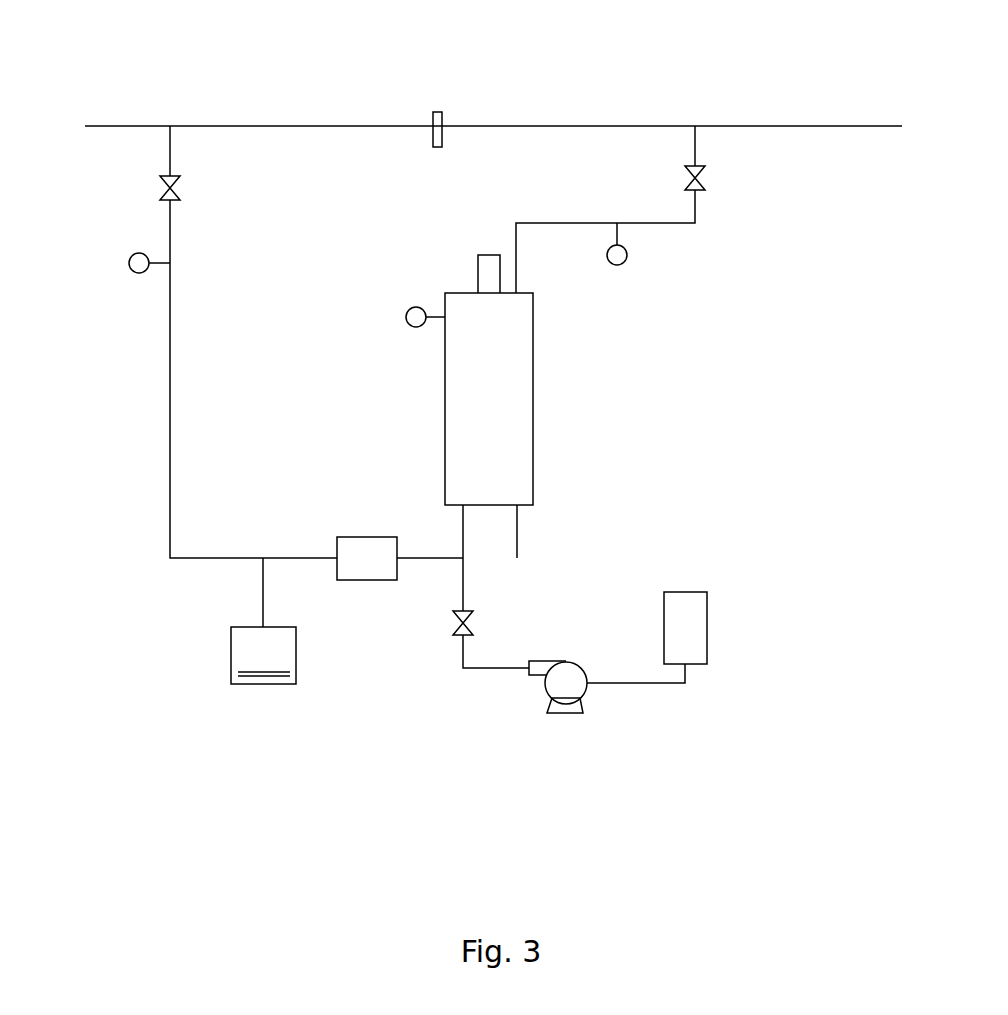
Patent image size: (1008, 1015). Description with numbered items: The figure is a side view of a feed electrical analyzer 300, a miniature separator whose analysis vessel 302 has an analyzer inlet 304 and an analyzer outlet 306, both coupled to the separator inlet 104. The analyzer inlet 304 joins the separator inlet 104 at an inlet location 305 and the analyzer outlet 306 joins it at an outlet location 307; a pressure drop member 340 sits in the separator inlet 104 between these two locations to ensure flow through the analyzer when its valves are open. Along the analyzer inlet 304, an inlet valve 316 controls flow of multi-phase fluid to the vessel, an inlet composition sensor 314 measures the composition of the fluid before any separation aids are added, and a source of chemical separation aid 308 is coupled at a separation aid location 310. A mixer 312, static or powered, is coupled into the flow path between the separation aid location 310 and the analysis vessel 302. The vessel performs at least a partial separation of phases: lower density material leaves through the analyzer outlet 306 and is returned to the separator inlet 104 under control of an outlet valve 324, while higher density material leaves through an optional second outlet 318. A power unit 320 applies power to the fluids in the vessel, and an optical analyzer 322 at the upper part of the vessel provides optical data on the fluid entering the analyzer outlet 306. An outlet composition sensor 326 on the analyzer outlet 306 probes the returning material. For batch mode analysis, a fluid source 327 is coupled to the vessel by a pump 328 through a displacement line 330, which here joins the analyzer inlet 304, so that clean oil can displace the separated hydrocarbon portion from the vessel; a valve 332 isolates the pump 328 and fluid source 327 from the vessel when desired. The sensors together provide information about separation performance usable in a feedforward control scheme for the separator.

The separator inlet 104 is at (763, 126).
The feed electrical analyzer 300 is at (260, 849).
The analysis vessel 302 is at (535, 434).
The analyzer inlet 304 is at (168, 405).
The inlet location 305 is at (170, 126).
The analyzer outlet 306 is at (697, 225).
The outlet location 307 is at (693, 121).
The source of chemical separation aid 308 is at (263, 655).
The separation aid location 310 is at (263, 558).
The mixer 312 is at (368, 580).
The inlet composition sensor 314 is at (128, 255).
The inlet valve 316 is at (173, 192).
The second outlet 318 is at (522, 533).
The power unit 320 is at (487, 253).
The optical analyzer 322 is at (407, 308).
The outlet valve 324 is at (702, 178).
The outlet composition sensor 326 is at (621, 264).
The fluid source 327 is at (708, 590).
The pump 328 is at (580, 698).
The displacement line 330 is at (477, 668).
The valve 332 is at (467, 623).
The pressure drop member 340 is at (438, 112).